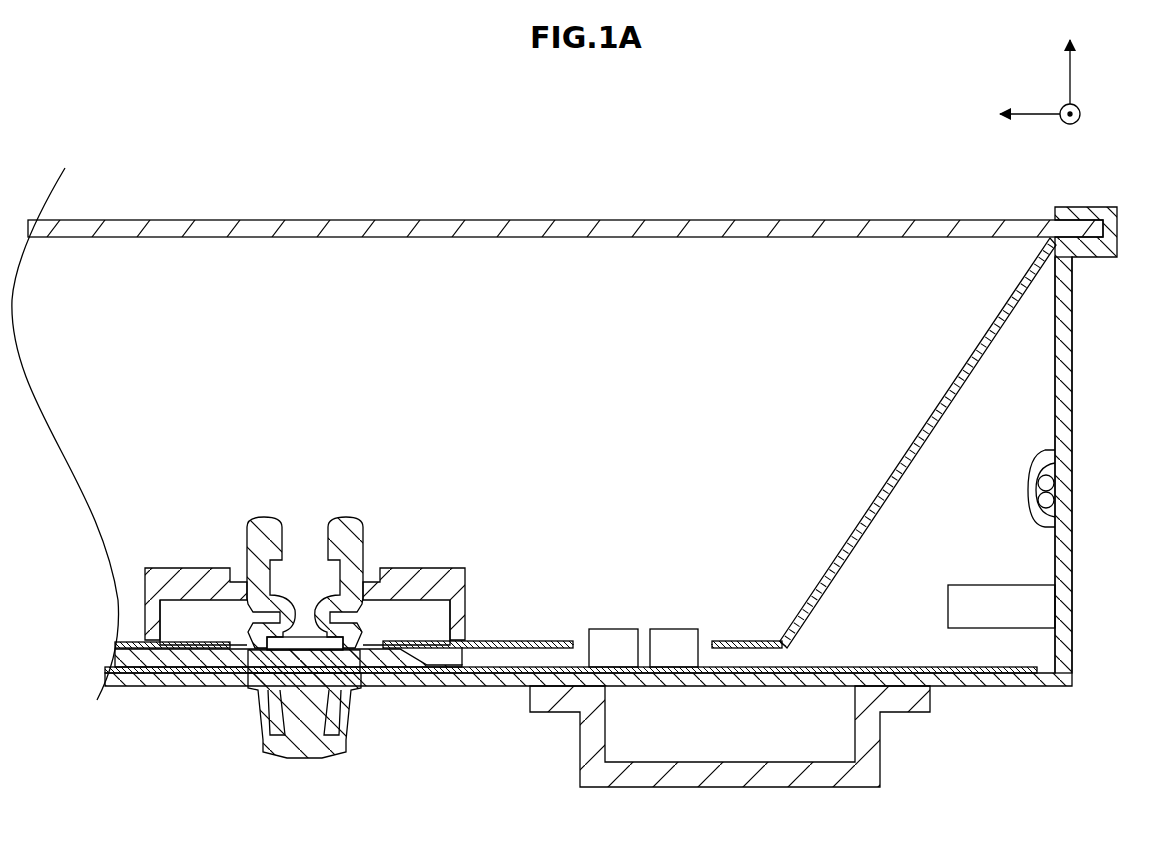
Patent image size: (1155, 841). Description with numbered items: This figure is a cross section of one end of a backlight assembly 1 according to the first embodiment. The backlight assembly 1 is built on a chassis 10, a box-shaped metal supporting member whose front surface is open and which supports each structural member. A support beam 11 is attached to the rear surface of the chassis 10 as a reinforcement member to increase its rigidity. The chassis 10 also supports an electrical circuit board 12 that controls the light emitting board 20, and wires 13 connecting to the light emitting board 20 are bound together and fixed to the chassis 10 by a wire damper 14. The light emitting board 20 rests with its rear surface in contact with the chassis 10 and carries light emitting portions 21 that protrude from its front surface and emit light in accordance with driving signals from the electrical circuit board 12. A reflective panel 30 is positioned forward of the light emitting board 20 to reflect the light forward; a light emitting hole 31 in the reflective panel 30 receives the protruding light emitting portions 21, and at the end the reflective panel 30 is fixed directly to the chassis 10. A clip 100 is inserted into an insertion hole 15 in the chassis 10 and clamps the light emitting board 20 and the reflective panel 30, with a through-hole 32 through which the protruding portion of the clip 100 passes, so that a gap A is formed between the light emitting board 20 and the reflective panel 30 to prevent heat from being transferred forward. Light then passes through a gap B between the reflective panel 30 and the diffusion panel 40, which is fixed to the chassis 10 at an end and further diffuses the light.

The backlight assembly 1 is at (858, 102).
The chassis 10 is at (962, 686).
The support beam 11 is at (731, 788).
The electrical circuit board 12 is at (1007, 585).
The wires 13 is at (1052, 483).
The wire damper 14 is at (1058, 445).
The insertion hole 15 is at (276, 692).
The light emitting board 20 is at (165, 688).
The light emitting portions 21 is at (612, 628).
The reflective panel 30 is at (522, 640).
The light emitting hole 31 is at (707, 639).
The through-hole 32 is at (377, 630).
The diffusion panel 40 is at (757, 220).
The clip 100 is at (331, 488).
The gap A is at (487, 656).
The gap B is at (598, 258).